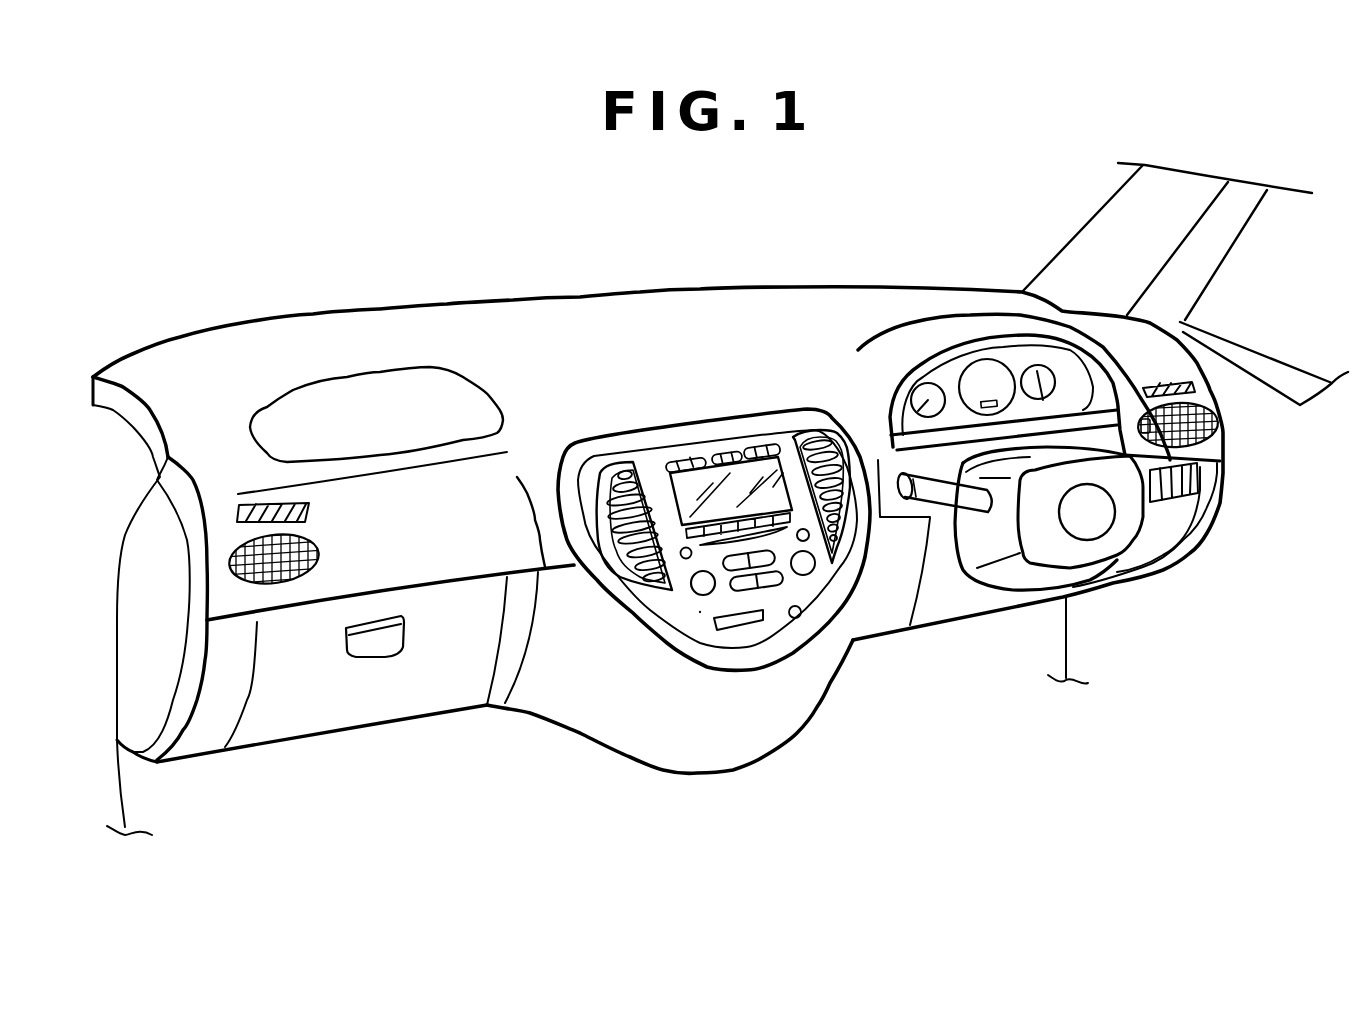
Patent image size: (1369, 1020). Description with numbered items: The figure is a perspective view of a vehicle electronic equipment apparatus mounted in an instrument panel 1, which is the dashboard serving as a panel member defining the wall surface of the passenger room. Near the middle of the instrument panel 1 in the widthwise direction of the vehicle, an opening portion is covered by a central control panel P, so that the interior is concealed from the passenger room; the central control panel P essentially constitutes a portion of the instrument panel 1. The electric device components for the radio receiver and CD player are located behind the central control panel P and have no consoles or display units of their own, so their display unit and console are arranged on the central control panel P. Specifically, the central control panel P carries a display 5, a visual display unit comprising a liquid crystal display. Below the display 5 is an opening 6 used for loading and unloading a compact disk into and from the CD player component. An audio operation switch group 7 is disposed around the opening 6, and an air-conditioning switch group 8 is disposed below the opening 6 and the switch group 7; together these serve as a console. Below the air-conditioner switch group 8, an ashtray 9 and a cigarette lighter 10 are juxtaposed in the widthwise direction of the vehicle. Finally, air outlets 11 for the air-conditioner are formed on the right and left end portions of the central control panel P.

The instrument panel 1 is at (711, 339).
The display 5 is at (670, 478).
The opening 6 is at (740, 524).
The audio operation switch group 7 is at (683, 558).
The air-conditioning switch group 8 is at (697, 590).
The ashtray 9 is at (738, 618).
The cigarette lighter 10 is at (800, 615).
The air outlets 11 is at (625, 527).
The central control panel P is at (702, 625).